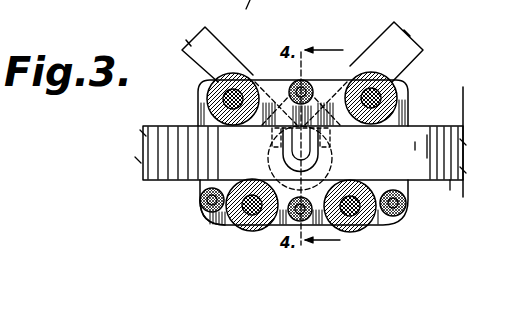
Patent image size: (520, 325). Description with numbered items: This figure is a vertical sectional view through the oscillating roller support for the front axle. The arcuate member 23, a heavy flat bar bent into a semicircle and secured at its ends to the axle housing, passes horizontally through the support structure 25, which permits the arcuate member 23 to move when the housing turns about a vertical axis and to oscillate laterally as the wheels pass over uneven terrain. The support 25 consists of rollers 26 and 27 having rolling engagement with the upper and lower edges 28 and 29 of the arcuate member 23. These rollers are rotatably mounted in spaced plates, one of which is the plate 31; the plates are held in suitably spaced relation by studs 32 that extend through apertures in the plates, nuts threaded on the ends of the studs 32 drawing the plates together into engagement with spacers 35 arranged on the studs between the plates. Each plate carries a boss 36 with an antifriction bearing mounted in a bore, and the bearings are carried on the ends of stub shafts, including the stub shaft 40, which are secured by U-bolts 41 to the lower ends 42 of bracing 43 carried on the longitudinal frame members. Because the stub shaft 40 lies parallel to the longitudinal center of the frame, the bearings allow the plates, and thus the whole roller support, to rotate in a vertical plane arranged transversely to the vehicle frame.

The arcuate member 23 is at (160, 131).
The support structure 25 is at (405, 94).
The roller 26 is at (354, 76).
The roller 27 is at (364, 224).
The upper edge 28 is at (440, 127).
The lower edge 29 is at (450, 181).
The plate 31 is at (408, 188).
The stud 32 is at (202, 198).
The spacer 35 is at (210, 223).
The boss 36 is at (335, 161).
The stub shaft 40 is at (288, 155).
The U-bolt 41 is at (332, 162).
The lower end 42 is at (275, 128).
The bracing 43 is at (218, 58).